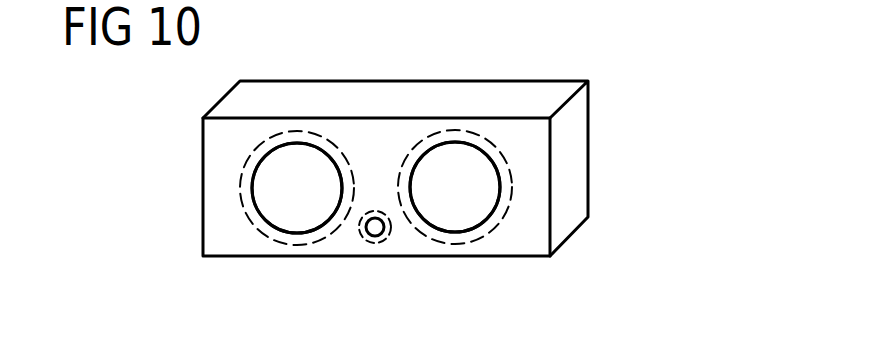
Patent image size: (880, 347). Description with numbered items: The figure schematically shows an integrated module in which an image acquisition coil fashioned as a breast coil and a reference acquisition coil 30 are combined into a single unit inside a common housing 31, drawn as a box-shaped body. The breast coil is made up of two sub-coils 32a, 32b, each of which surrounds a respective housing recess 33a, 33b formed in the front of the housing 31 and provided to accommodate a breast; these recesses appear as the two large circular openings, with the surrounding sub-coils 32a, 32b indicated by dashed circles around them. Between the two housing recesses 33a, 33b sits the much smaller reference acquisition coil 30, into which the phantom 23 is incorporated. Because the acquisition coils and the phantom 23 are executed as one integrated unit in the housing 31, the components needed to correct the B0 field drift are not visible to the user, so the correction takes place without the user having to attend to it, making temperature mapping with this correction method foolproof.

The common housing 31 is at (527, 92).
The sub-coil 32b is at (240, 189).
The housing recess 33b is at (285, 210).
The sub-coil 32a is at (510, 188).
The housing recess 33a is at (462, 212).
The phantom 23 is at (382, 237).
The reference acquisition coil 30 is at (364, 240).